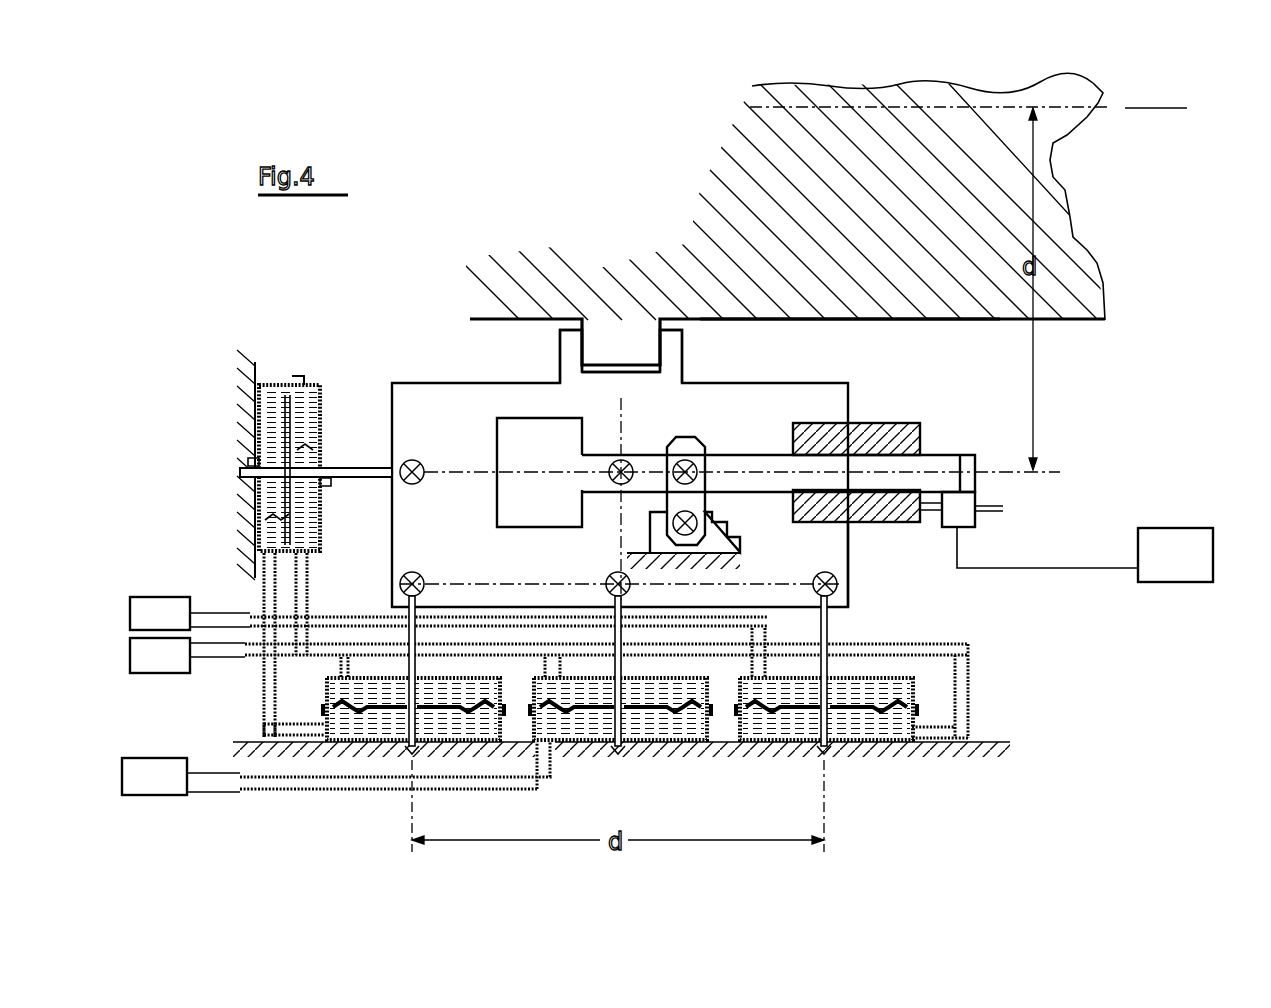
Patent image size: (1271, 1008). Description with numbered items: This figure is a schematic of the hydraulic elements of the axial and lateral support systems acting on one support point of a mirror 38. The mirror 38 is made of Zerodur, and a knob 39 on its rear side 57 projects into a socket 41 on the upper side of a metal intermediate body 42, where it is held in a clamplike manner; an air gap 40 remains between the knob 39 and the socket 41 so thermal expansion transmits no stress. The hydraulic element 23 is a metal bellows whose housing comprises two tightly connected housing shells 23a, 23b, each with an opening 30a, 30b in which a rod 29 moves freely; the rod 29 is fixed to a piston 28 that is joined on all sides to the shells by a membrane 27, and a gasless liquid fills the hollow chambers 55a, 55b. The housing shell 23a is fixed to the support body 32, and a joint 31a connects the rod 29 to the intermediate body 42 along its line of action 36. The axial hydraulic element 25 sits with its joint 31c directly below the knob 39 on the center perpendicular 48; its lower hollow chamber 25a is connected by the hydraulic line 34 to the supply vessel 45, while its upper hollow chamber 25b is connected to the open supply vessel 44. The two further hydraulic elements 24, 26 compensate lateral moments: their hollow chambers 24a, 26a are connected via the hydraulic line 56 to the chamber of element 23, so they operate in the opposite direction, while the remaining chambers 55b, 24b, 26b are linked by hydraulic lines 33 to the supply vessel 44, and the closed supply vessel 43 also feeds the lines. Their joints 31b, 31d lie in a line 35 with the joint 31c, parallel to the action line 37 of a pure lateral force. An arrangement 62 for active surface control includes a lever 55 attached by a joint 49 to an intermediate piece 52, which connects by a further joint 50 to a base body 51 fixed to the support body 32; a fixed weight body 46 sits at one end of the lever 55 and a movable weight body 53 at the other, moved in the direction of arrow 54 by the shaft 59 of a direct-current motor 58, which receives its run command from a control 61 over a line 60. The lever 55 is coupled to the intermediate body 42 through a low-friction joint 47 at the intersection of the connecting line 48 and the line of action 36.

The hydraulic element 23 is at (286, 432).
The housing shell 23a is at (262, 578).
The housing shell 23b is at (312, 556).
The hydraulic element 24 is at (431, 715).
The hollow chamber 24a is at (485, 722).
The hollow chamber 24b is at (380, 700).
The hydraulic element 25 is at (632, 696).
The lower hollow chamber 25a is at (683, 728).
The upper hollow chamber 25b is at (590, 690).
The hydraulic element 26 is at (838, 696).
The hollow chamber 26a is at (790, 690).
The hollow chamber 26b is at (890, 728).
The membrane 27 is at (312, 385).
The piston 28 is at (268, 493).
The rod 29 is at (388, 486).
The opening 30a is at (250, 462).
The opening 30b is at (327, 483).
The joint 31a is at (412, 460).
The joint 31b is at (420, 578).
The joint 31c is at (610, 580).
The joint 31d is at (832, 578).
The support body 32 is at (735, 568).
The hydraulic line 33 is at (962, 642).
The hydraulic line 34 is at (270, 792).
The line 35 is at (850, 588).
The line of action 36 is at (1060, 470).
The action line 37 is at (1143, 110).
The mirror 38 is at (1068, 322).
The knob 39 is at (565, 335).
The air gap 40 is at (650, 372).
The socket 41 is at (676, 338).
The intermediate body 42 is at (775, 398).
The supply vessel 43 is at (160, 605).
The supply vessel 44 is at (155, 665).
The supply vessel 45 is at (160, 770).
The fixed weight body 46 is at (497, 432).
The joint 47 is at (626, 460).
The center perpendicular 48 is at (621, 400).
The joint 49 is at (693, 465).
The joint 50 is at (698, 520).
The base body 51 is at (740, 548).
The intermediate piece 52 is at (686, 440).
The movable weight body 53 is at (905, 423).
The arrow 54 is at (903, 413).
The lever 55 is at (963, 455).
The hollow chamber 55a is at (258, 520).
The hollow chamber 55b is at (305, 450).
The hydraulic line 56 is at (346, 615).
The rear side 57 is at (893, 322).
The direct-current motor 58 is at (977, 520).
The shaft 59 is at (1005, 510).
The line 60 is at (1057, 570).
The control 61 is at (1177, 540).
The arrangement 62 is at (937, 443).